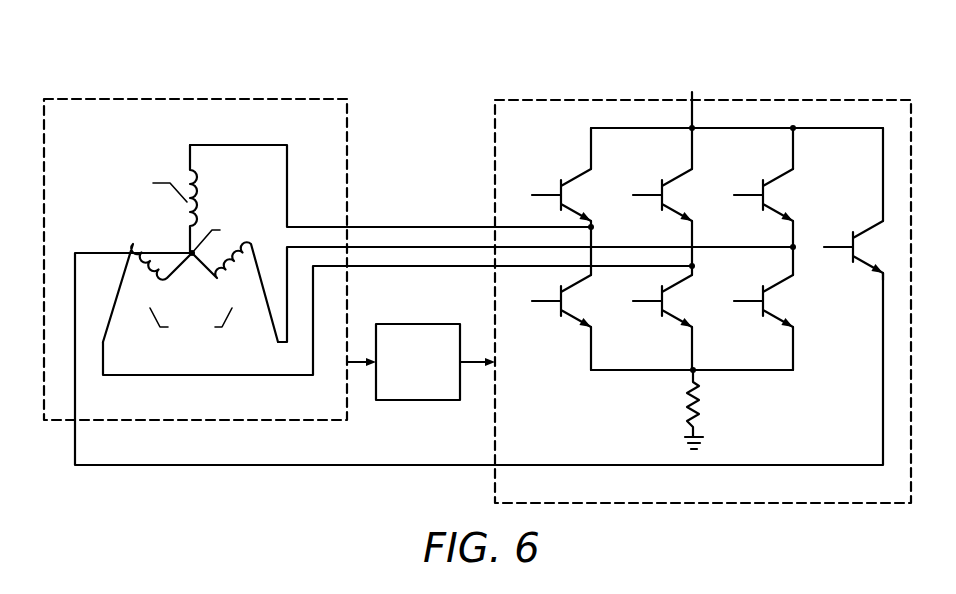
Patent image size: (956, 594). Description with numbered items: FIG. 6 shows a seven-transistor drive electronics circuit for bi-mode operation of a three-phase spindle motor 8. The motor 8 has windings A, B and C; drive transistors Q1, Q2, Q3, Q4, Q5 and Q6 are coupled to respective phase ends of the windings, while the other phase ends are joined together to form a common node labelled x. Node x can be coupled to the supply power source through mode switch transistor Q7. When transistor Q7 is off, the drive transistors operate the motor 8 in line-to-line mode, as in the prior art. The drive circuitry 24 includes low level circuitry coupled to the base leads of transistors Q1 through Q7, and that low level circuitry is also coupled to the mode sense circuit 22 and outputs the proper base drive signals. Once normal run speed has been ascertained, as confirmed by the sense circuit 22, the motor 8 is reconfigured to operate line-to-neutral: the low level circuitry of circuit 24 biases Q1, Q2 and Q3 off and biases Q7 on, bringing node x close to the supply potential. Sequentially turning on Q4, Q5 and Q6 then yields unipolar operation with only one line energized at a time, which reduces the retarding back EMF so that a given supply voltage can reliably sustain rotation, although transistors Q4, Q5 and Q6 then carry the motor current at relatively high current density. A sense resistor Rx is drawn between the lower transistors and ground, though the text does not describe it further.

The motor 8 is at (72, 94).
The mode sense circuit 22 is at (425, 324).
The drive circuitry 24 is at (693, 261).
The drive transistor Q1 is at (557, 177).
The drive transistor Q2 is at (657, 197).
The drive transistor Q3 is at (758, 187).
The drive transistor Q4 is at (556, 298).
The drive transistor Q5 is at (657, 318).
The drive transistor Q6 is at (758, 308).
The mode switch transistor Q7 is at (846, 204).
The sense resistor Rx is at (712, 409).